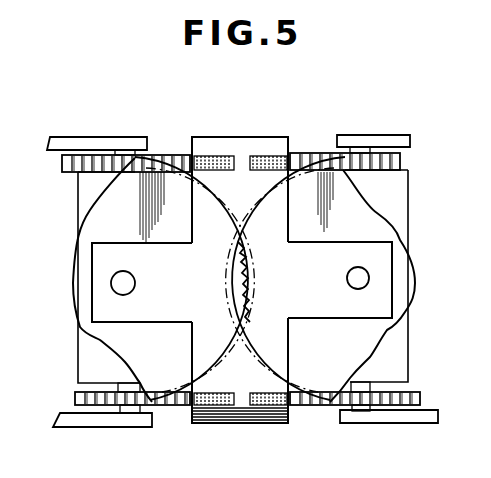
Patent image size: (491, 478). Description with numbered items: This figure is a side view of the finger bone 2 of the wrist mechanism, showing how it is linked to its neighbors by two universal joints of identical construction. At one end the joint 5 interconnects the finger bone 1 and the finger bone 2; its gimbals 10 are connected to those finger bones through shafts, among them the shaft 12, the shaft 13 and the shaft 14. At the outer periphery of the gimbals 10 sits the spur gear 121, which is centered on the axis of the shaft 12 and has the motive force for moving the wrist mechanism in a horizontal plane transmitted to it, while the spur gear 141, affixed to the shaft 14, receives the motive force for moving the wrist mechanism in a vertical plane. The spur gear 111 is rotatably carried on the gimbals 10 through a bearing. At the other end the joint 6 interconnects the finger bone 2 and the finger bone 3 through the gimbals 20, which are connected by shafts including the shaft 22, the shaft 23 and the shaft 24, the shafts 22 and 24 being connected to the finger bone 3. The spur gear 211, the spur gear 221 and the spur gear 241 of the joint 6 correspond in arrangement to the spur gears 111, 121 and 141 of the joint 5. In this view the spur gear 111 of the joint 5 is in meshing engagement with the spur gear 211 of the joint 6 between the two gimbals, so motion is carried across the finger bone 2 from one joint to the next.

The finger bone 1 is at (78, 142).
The shaft 12 is at (122, 150).
The joint 5 is at (155, 150).
The spur gear 121 is at (172, 153).
The finger bone 2 is at (250, 137).
The spur gear 221 is at (305, 152).
The shaft 22 is at (358, 147).
The joint 6 is at (364, 186).
The finger bone 3 is at (400, 140).
The gimbals 20 is at (408, 186).
The gimbals 10 is at (78, 196).
The shaft 13 is at (123, 283).
The shaft 23 is at (358, 278).
The spur gear 141 is at (82, 416).
The shaft 14 is at (130, 409).
The spur gear 111 is at (178, 406).
The spur gear 211 is at (320, 380).
The shaft 24 is at (360, 410).
The spur gear 241 is at (400, 411).